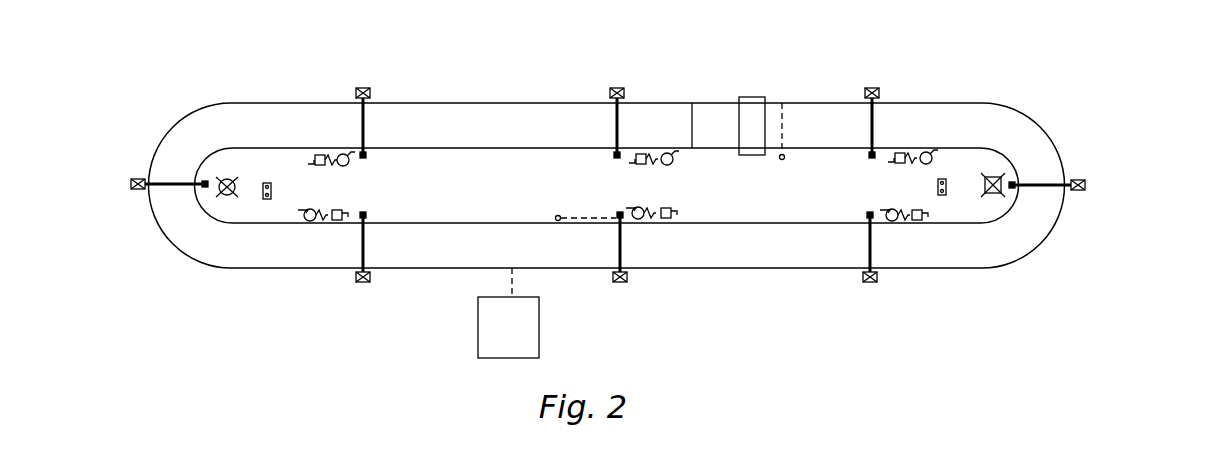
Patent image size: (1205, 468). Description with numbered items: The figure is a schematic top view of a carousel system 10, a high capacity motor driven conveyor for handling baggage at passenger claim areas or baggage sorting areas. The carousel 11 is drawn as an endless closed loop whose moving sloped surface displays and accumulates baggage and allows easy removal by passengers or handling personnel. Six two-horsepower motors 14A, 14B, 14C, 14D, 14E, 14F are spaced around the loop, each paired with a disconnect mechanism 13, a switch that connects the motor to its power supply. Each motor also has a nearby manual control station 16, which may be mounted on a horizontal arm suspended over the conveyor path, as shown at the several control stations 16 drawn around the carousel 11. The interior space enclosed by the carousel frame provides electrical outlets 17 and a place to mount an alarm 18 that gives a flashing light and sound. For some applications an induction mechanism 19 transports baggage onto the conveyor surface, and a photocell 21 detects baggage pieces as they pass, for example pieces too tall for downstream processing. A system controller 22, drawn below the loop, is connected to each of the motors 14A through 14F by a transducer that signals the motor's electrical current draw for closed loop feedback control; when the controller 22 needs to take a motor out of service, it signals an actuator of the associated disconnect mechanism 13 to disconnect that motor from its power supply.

The carousel system 10 is at (711, 279).
The carousel 11 is at (517, 148).
The disconnect mechanism 13 is at (316, 155).
The motor 14A is at (928, 152).
The motor 14B is at (667, 153).
The motor 14C is at (342, 154).
The motor 14D is at (306, 222).
The motor 14E is at (637, 220).
The motor 14F is at (897, 222).
The manual control station 16 is at (360, 87).
The electrical outlet 17 is at (262, 199).
The alarm 18 is at (219, 181).
The induction mechanism 19 is at (751, 96).
The photocell 21 is at (783, 102).
The system controller 22 is at (508, 313).